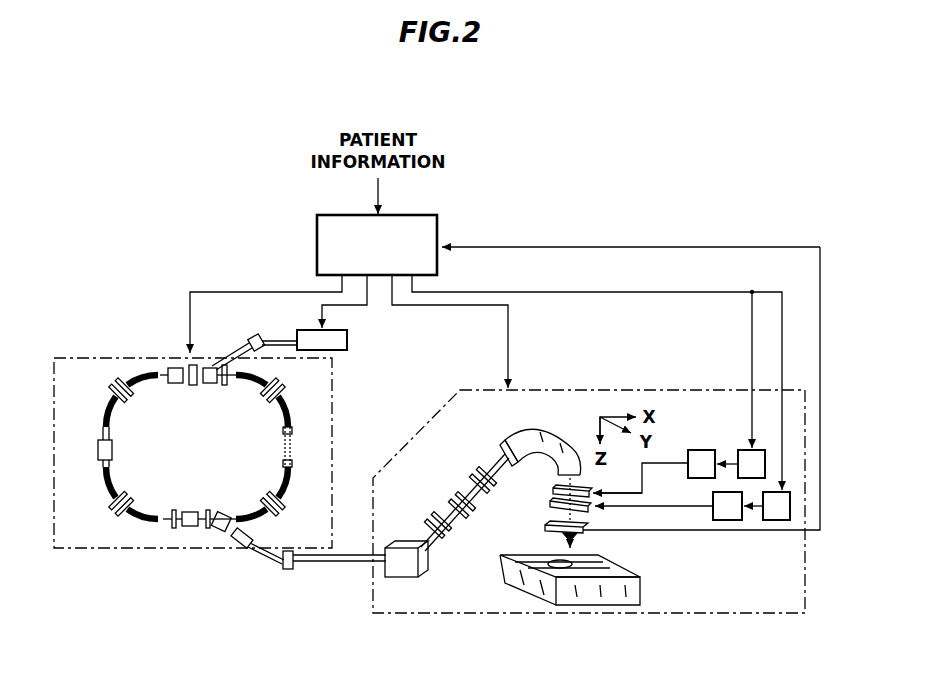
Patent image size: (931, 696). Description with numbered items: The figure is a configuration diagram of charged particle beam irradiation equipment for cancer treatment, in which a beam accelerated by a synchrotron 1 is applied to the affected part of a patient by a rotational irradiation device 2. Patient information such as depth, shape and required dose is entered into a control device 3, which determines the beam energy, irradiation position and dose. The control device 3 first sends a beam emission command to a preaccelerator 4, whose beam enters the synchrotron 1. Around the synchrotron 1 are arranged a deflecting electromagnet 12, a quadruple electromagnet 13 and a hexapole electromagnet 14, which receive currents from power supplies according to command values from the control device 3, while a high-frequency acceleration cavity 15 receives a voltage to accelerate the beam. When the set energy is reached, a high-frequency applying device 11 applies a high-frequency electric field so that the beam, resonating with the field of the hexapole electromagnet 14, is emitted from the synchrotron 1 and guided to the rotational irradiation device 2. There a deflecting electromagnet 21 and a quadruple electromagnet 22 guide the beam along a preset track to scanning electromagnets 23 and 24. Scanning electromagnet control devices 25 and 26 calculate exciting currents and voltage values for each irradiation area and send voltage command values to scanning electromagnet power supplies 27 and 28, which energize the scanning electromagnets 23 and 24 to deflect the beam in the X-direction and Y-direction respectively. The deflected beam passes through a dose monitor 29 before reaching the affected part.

The synchrotron 1 is at (141, 550).
The rotational irradiation device 2 is at (496, 613).
The control device 3 is at (437, 220).
The preaccelerator 4 is at (349, 341).
The high-frequency applying device 11 is at (173, 366).
The deflecting electromagnet 12 is at (142, 374).
The quadruple electromagnet 13 is at (122, 386).
The hexapole electromagnet 14 is at (114, 397).
The high-frequency acceleration cavity 15 is at (97, 451).
The deflecting electromagnet 21 is at (530, 437).
The quadruple electromagnet 22 is at (480, 472).
The scanning electromagnet 23 is at (552, 491).
The scanning electromagnet 24 is at (549, 504).
The scanning electromagnet control device 25 is at (746, 450).
The scanning electromagnet control device 26 is at (777, 521).
The scanning electromagnet power supply 27 is at (699, 450).
The scanning electromagnet power supply 28 is at (727, 521).
The dose monitor 29 is at (546, 528).